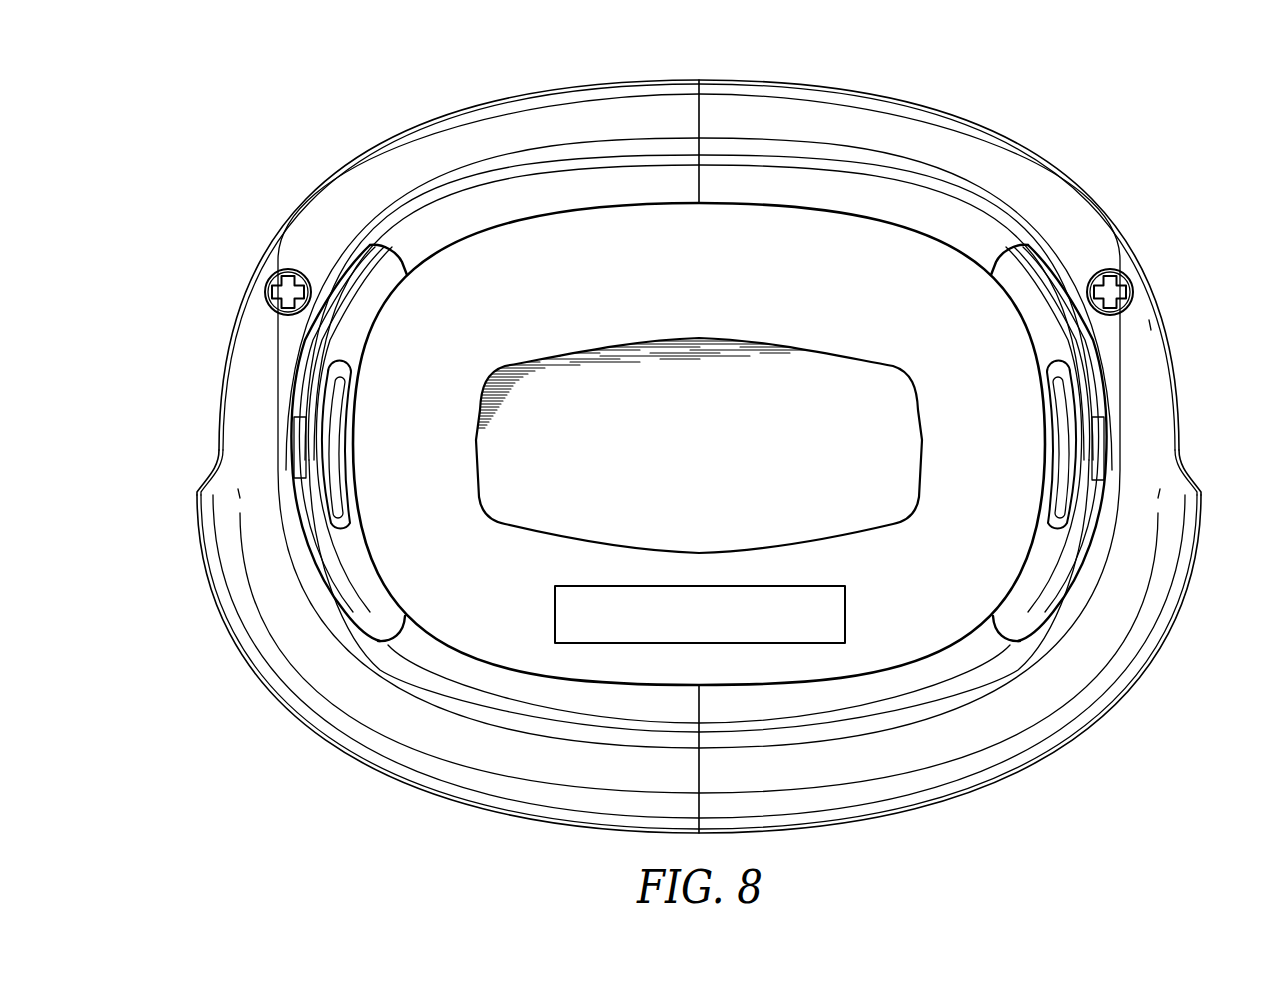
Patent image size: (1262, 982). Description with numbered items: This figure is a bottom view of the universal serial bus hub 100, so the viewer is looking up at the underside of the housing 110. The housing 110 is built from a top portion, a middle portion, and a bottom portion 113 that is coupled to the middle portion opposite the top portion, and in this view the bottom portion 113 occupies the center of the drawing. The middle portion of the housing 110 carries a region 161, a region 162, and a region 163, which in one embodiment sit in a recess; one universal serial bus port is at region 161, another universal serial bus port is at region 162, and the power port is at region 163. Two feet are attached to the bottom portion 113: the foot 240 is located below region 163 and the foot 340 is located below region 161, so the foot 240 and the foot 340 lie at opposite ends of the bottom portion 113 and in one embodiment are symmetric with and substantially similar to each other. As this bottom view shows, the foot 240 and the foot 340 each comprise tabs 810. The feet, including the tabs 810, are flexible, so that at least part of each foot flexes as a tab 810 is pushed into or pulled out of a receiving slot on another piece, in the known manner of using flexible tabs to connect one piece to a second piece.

The universal serial bus hub 100 is at (322, 110).
The housing 110 is at (975, 826).
The bottom portion 113 is at (450, 742).
The region 161 is at (203, 432).
The region 162 is at (790, 68).
The region 163 is at (1192, 438).
The foot 240 is at (1052, 333).
The foot 340 is at (346, 330).
The tab 810 is at (300, 451).